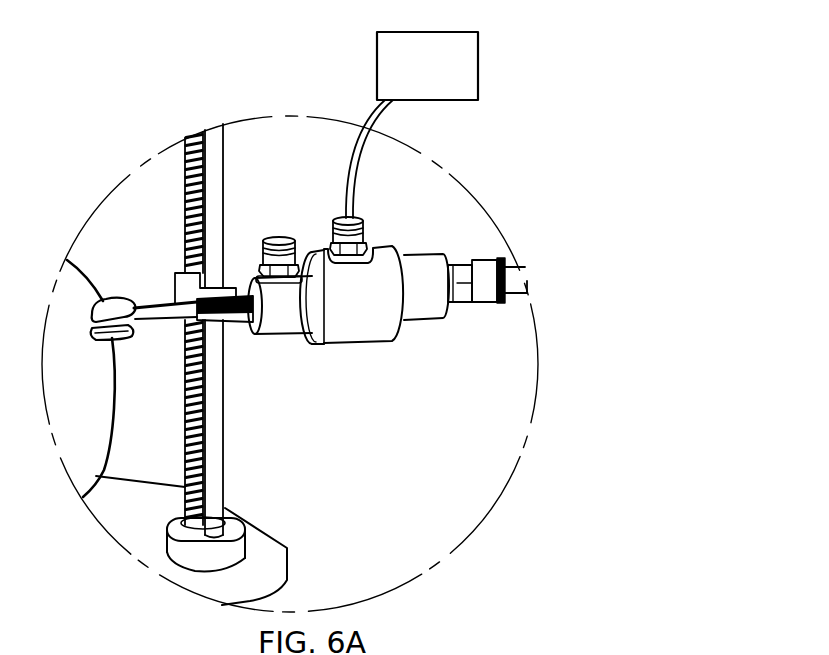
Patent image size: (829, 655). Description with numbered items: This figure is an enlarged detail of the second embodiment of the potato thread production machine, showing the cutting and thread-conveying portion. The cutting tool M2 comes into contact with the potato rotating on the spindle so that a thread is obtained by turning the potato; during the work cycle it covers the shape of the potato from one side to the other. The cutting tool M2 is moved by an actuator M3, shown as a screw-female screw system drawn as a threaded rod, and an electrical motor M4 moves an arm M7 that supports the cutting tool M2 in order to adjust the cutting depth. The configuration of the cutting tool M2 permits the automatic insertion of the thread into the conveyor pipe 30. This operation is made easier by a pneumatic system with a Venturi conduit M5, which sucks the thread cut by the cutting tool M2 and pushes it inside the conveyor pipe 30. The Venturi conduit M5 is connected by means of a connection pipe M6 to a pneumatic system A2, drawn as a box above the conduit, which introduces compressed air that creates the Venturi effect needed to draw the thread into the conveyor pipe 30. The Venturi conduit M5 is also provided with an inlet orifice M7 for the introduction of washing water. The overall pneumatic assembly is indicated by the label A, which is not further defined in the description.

The cutting tool M2 is at (117, 307).
The actuator M3 is at (183, 245).
The electrical motor M4 is at (191, 581).
The Venturi conduit M5 is at (367, 343).
The connection pipe M6 is at (357, 218).
The arm / inlet orifice M7 is at (280, 238).
The conveyor pipe 30 is at (517, 278).
The measuring device A is at (420, 109).
The pneumatic system A2 is at (397, 70).